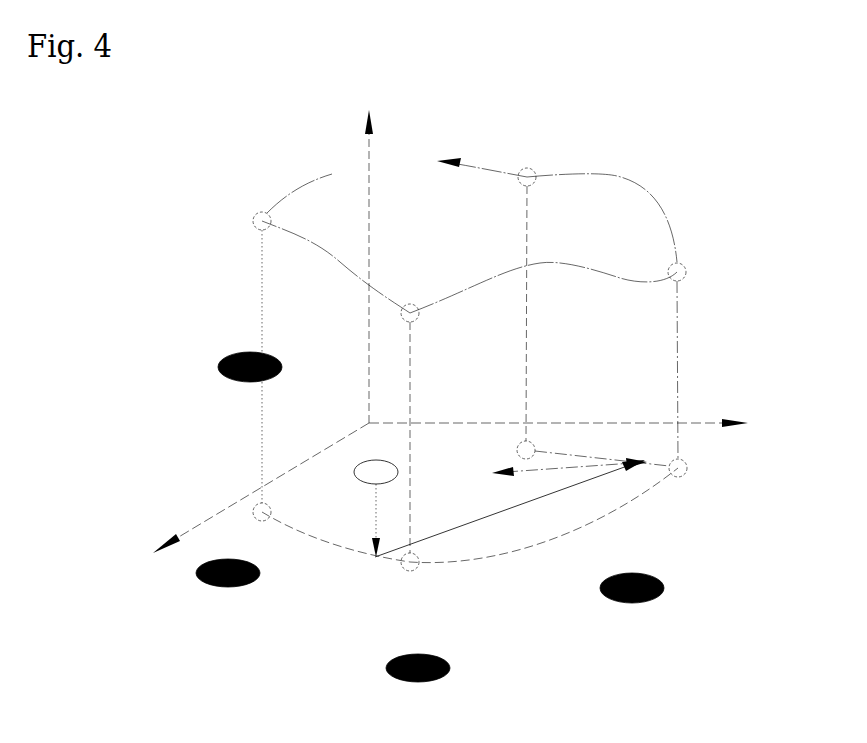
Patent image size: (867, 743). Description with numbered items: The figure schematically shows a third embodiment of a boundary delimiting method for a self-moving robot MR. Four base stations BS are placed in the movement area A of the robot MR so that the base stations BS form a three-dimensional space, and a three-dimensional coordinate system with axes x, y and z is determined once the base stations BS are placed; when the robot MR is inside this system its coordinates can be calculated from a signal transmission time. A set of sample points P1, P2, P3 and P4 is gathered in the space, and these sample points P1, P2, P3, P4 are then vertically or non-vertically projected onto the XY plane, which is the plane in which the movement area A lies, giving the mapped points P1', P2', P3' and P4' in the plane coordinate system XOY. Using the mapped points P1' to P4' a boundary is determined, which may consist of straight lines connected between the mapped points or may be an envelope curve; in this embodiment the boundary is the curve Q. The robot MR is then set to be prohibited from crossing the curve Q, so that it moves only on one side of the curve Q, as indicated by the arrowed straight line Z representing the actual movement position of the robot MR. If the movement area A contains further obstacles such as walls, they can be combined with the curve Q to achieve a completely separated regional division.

The sample point P1 is at (557, 288).
The sample point P2 is at (563, 359).
The sample point P3 is at (353, 387).
The sample point P4 is at (277, 338).
The mapped point P1' is at (593, 430).
The mapped point P2' is at (694, 465).
The mapped point P3' is at (425, 574).
The mapped point P4' is at (280, 507).
The base station BS is at (445, 526).
The self-moving robot MR is at (375, 458).
The straight line with arrow Z is at (510, 508).
The curve Q is at (635, 510).
The movement area A is at (228, 541).
The x axis x is at (558, 412).
The y axis y is at (261, 488).
The z axis z is at (378, 266).